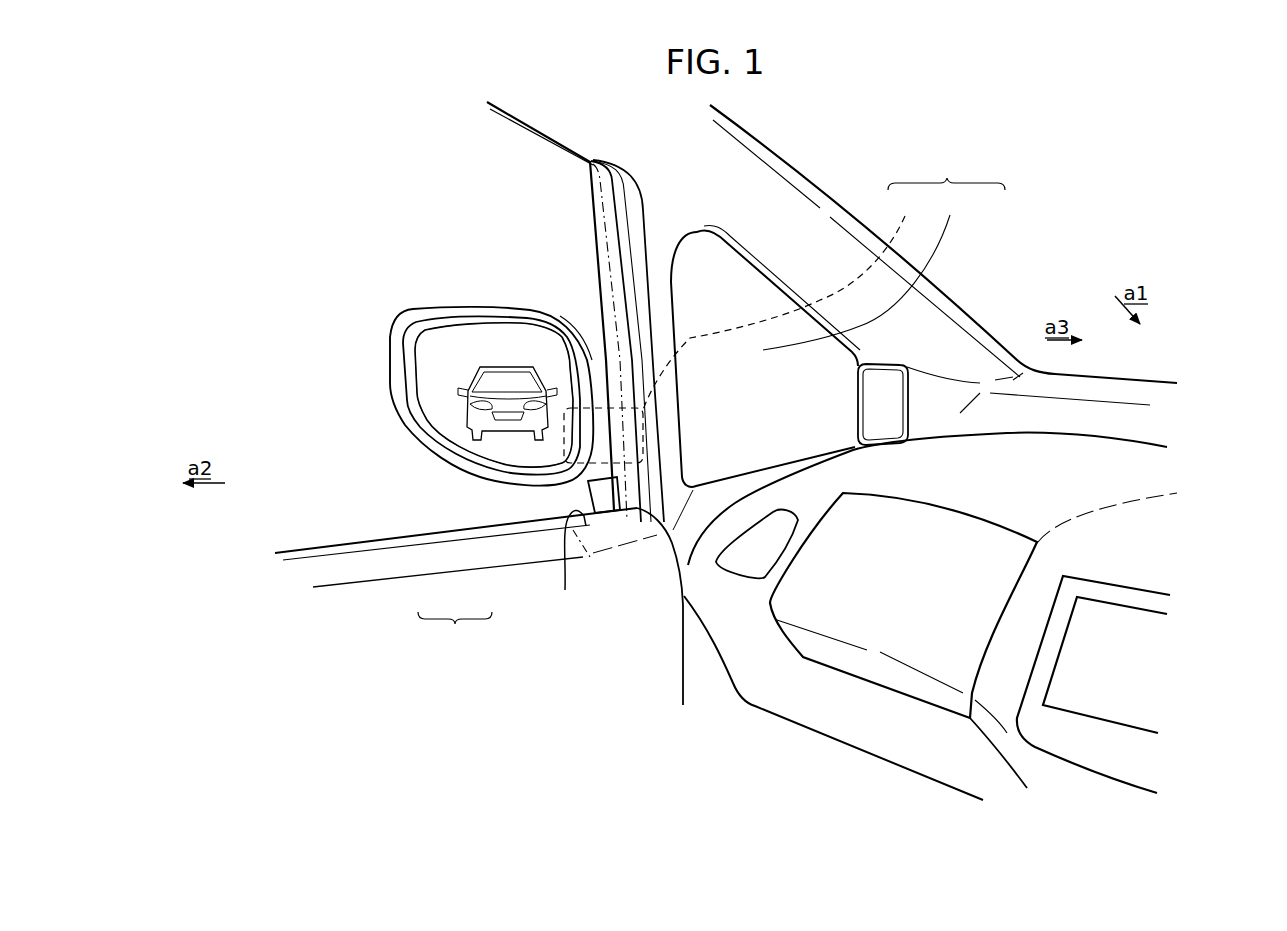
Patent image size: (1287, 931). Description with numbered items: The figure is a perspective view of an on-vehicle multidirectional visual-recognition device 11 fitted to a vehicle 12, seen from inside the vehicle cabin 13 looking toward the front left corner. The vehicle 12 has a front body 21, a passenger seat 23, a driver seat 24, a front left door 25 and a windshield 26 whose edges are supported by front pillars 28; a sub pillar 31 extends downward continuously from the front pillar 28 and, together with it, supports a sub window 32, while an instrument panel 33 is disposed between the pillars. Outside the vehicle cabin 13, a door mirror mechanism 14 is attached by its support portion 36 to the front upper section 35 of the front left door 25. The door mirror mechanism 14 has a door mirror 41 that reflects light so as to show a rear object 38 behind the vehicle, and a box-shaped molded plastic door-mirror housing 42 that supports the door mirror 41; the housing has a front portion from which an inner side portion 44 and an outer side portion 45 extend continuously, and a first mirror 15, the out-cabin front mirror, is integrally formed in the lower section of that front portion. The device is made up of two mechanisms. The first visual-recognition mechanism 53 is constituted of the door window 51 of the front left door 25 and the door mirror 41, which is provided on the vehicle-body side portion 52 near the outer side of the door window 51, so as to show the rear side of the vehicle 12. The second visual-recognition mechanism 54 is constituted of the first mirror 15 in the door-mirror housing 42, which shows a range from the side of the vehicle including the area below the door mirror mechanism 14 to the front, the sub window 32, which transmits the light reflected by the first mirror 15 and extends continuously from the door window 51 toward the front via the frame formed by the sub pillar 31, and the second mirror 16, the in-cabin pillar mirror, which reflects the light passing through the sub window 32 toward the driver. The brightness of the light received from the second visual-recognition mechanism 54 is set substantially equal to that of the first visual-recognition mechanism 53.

The on-vehicle multidirectional visual-recognition device 11 is at (519, 268).
The vehicle 12 is at (421, 126).
The vehicle cabin 13 is at (340, 831).
The door mirror mechanism 14 is at (378, 330).
The first mirror (out-cabin front mirror) 15 is at (737, 328).
The second mirror (in-cabin pillar mirror) 16 is at (887, 390).
The front body 21 is at (1192, 358).
The passenger seat 23 is at (543, 763).
The driver seat 24 is at (978, 863).
The front left door 25 is at (333, 548).
The windshield 26 is at (1023, 268).
The front pillar 28 is at (788, 210).
The sub pillar 31 is at (648, 298).
The sub window 32 is at (861, 271).
The instrument panel 33 is at (1122, 467).
The front upper section 35 is at (565, 590).
The support portion 36 is at (590, 484).
The rear object 38 is at (492, 364).
The door mirror 41 is at (458, 442).
The door-mirror housing 42 is at (404, 322).
The inner side portion 44 is at (597, 338).
The outer side portion 45 is at (388, 396).
The door window 51 is at (417, 507).
The vehicle-body side portion 52 is at (347, 468).
The first visual-recognition mechanism 53 is at (455, 630).
The second visual-recognition mechanism 54 is at (946, 171).